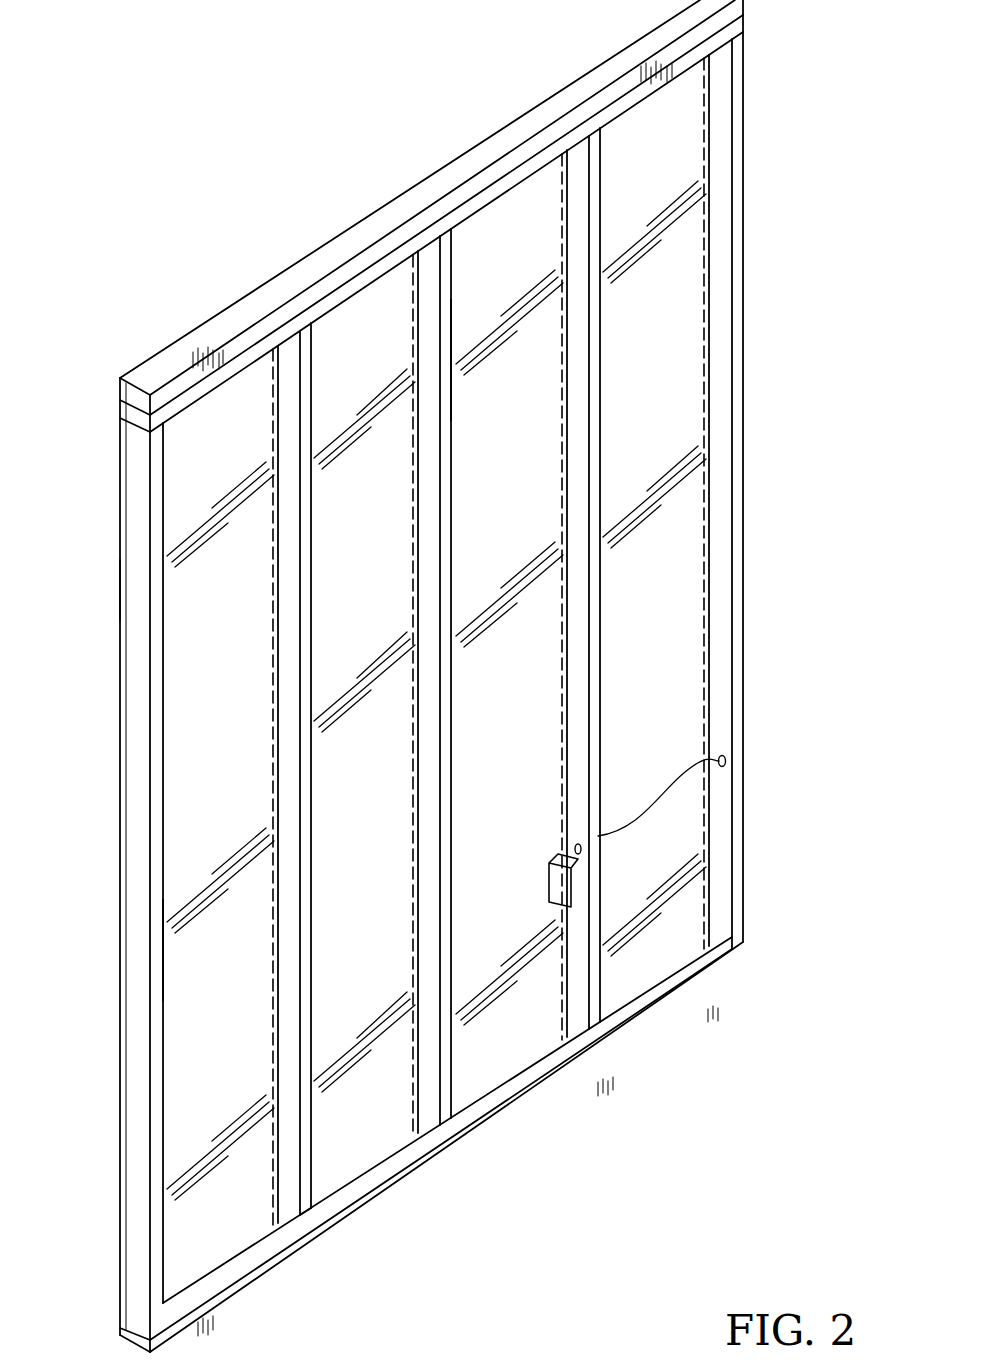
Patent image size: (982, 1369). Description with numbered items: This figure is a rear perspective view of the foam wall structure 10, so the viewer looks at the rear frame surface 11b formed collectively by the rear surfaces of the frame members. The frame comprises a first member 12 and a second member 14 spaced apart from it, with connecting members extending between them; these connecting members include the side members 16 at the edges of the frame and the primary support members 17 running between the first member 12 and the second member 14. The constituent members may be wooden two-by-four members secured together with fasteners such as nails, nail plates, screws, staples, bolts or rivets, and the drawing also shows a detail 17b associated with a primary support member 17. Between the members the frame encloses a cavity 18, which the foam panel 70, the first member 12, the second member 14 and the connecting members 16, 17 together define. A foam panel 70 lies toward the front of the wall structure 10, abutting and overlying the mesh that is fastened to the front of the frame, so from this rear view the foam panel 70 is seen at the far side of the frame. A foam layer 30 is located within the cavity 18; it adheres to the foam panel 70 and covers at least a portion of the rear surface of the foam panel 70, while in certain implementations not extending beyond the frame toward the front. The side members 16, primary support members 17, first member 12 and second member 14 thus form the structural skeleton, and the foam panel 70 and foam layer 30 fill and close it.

The wall structure 10 is at (757, 975).
The rear frame surface 11b is at (548, 1133).
The first member 12 is at (113, 377).
The second member 14 is at (683, 992).
The side member 16 is at (132, 745).
The primary support member 17 is at (420, 282).
The stud flange 17b is at (453, 296).
The cavity 18 is at (209, 747).
The foam layer 30 is at (215, 948).
The foam panel 70 is at (128, 592).